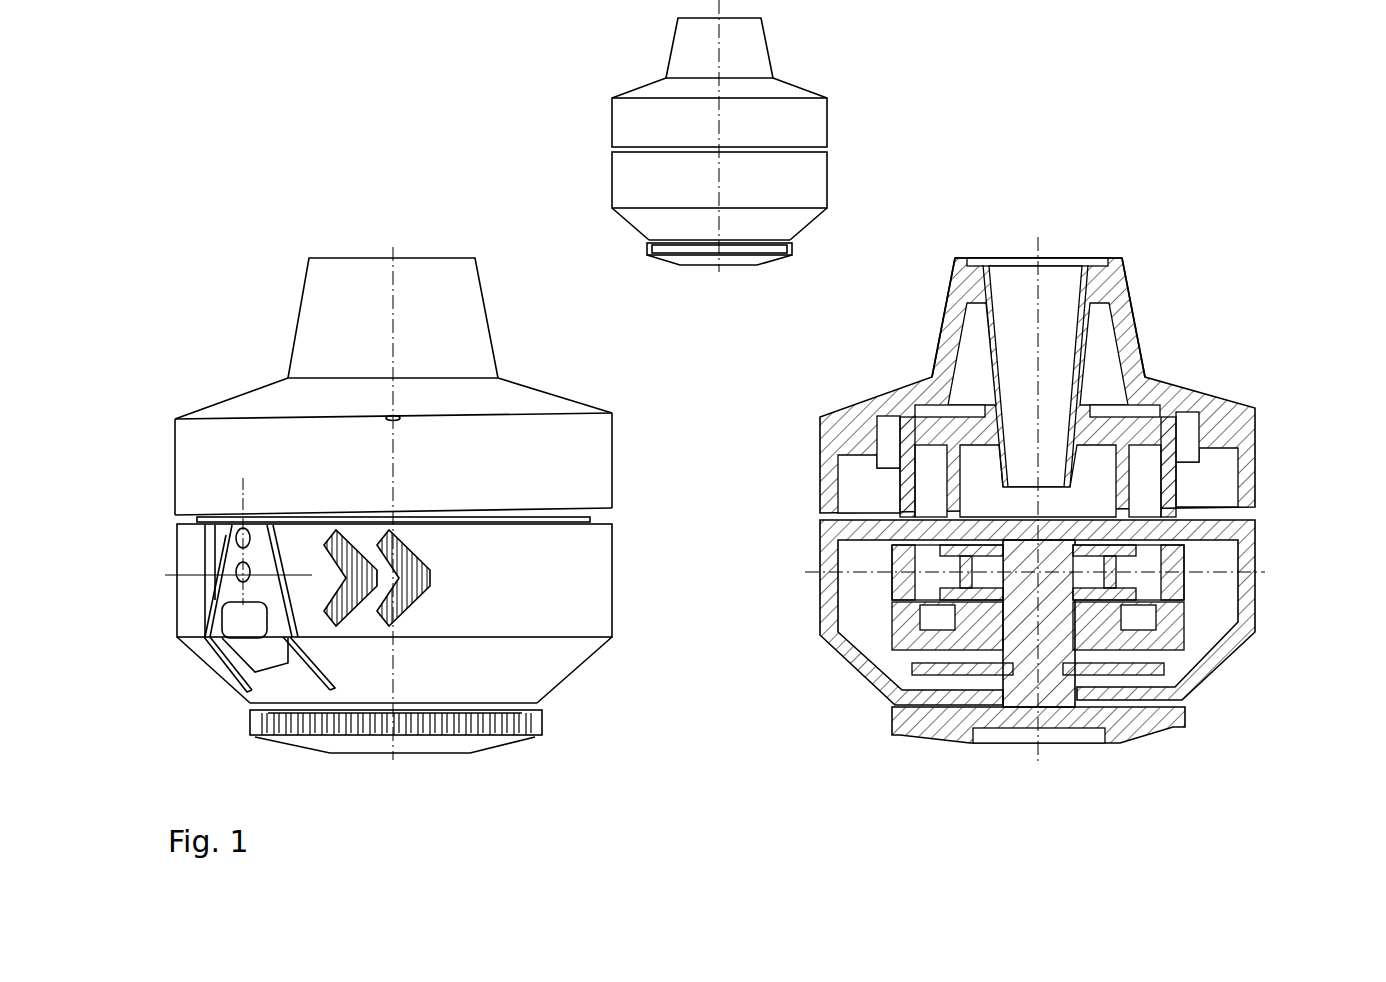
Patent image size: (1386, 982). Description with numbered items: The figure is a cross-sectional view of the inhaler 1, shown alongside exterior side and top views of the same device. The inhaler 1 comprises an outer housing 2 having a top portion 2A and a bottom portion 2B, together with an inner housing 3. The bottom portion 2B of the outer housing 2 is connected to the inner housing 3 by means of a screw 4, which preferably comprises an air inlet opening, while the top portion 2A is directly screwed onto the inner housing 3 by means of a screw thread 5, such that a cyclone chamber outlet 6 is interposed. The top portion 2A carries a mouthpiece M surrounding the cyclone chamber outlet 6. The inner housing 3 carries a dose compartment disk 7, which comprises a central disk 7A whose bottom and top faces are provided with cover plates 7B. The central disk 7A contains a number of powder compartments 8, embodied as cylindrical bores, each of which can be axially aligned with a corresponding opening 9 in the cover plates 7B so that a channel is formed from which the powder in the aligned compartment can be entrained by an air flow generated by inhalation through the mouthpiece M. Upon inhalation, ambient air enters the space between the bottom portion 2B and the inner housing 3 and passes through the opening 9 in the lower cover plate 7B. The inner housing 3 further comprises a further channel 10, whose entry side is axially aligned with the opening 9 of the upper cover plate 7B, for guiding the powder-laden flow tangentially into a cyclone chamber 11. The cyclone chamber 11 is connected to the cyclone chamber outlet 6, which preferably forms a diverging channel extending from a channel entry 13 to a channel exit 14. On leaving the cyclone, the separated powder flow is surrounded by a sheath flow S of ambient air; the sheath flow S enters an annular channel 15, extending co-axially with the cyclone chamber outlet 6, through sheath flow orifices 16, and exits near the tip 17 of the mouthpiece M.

The inhaler 1 is at (1035, 498).
The outer housing 2 is at (1086, 481).
The top portion 2A is at (1243, 430).
The bottom portion 2B is at (1250, 633).
The inner housing 3 is at (1022, 556).
The screw 4 is at (1147, 725).
The screw thread 5 is at (1195, 432).
The cyclone chamber outlet 6 is at (1153, 425).
The dose compartment disk 7 is at (1027, 622).
The central disk 7A is at (900, 575).
The cover plates 7B is at (905, 555).
The powder compartments 8 is at (960, 560).
The opening 9 is at (930, 560).
The further channel 10 is at (928, 468).
The cyclone chamber 11 is at (990, 508).
The channel entry 13 is at (928, 548).
The channel exit 14 is at (1055, 263).
The annular channel 15 is at (972, 367).
The sheath flow orifices 16 is at (1153, 400).
The tip 17 is at (1102, 262).
The mouthpiece M is at (1128, 288).
The sheath flow S is at (356, 577).